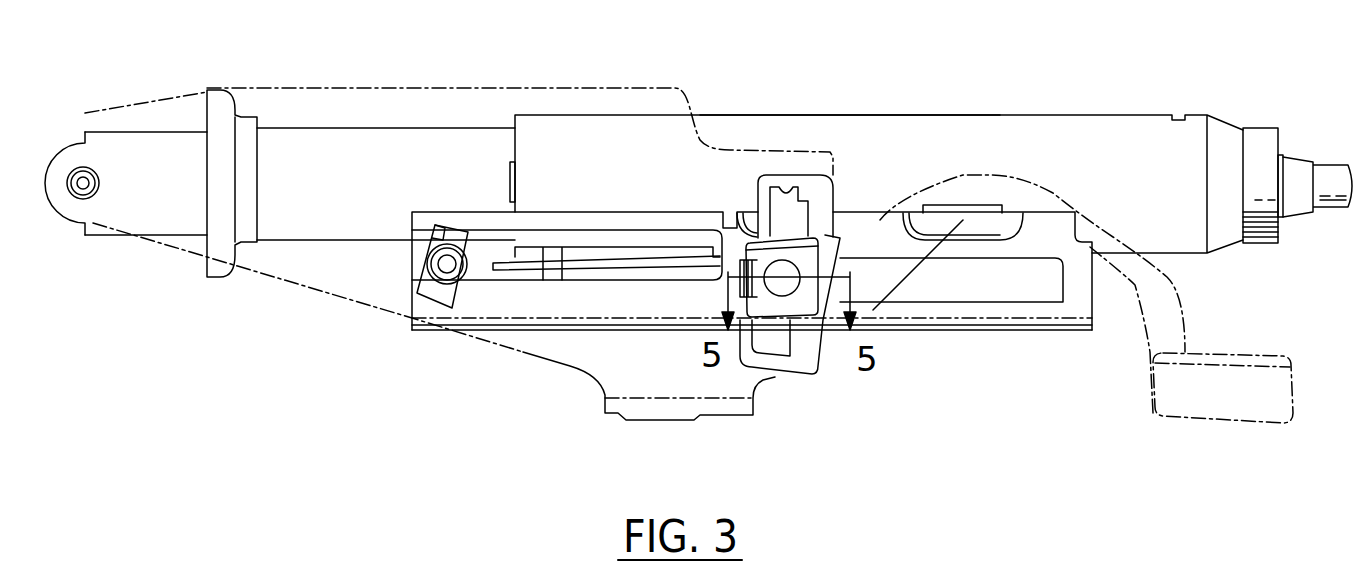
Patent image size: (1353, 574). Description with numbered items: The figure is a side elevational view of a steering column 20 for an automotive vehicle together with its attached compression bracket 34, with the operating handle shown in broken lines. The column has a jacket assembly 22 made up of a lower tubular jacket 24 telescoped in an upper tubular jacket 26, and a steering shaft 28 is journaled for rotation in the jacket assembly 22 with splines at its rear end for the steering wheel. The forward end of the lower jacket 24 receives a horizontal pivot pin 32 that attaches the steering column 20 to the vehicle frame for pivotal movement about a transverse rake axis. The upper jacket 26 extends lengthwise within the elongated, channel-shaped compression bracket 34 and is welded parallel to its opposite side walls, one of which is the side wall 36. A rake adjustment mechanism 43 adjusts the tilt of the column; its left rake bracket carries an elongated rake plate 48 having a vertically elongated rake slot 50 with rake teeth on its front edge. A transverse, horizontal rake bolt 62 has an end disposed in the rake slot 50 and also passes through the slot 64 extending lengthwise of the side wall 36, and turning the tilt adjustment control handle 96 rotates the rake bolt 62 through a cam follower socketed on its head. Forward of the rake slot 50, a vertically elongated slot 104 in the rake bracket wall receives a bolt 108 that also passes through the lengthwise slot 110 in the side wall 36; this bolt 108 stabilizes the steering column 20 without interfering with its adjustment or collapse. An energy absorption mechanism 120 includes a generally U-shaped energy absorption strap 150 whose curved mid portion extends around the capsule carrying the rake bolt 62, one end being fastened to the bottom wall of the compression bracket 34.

The steering column 20 is at (935, 97).
The jacket assembly 22 is at (1113, 100).
The lower tubular jacket 24 is at (357, 128).
The upper tubular jacket 26 is at (850, 115).
The steering shaft 28 is at (1330, 163).
The horizontal pivot pin 32 is at (87, 172).
The compression bracket 34 is at (990, 315).
The side wall 36 is at (515, 312).
The rake adjustment mechanism 43 is at (830, 376).
The rake plate 48 is at (827, 188).
The rake slot 50 is at (790, 187).
The rake bolt 62 is at (778, 292).
The slot 64 is at (1047, 300).
The tilt adjustment control handle 96 is at (1218, 403).
The slot 104 is at (442, 228).
The bolt 108 is at (443, 268).
The slot 110 is at (610, 280).
The energy absorption mechanism 120 is at (641, 238).
The energy absorption strap 150 is at (659, 270).